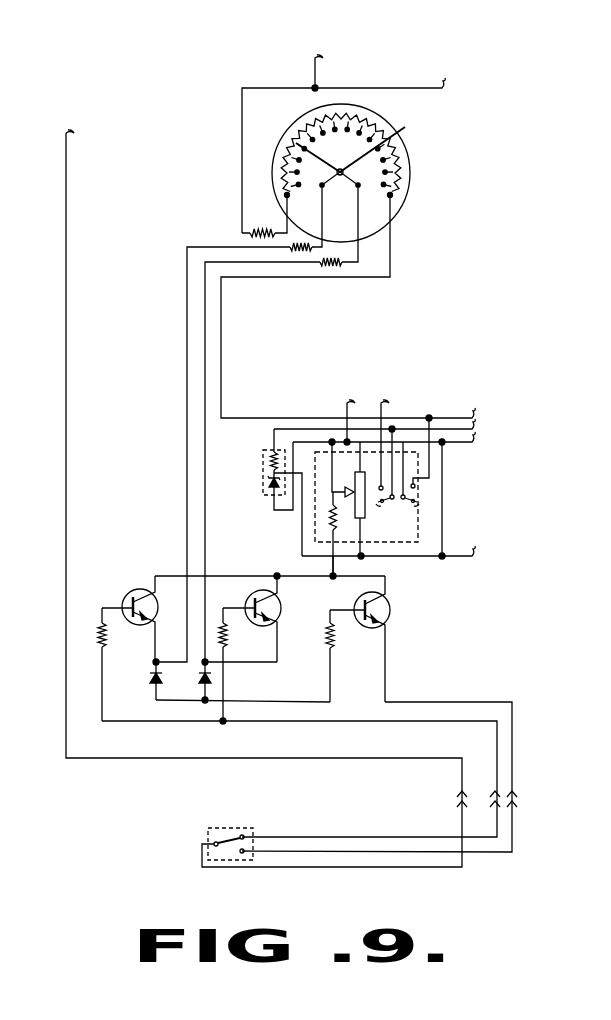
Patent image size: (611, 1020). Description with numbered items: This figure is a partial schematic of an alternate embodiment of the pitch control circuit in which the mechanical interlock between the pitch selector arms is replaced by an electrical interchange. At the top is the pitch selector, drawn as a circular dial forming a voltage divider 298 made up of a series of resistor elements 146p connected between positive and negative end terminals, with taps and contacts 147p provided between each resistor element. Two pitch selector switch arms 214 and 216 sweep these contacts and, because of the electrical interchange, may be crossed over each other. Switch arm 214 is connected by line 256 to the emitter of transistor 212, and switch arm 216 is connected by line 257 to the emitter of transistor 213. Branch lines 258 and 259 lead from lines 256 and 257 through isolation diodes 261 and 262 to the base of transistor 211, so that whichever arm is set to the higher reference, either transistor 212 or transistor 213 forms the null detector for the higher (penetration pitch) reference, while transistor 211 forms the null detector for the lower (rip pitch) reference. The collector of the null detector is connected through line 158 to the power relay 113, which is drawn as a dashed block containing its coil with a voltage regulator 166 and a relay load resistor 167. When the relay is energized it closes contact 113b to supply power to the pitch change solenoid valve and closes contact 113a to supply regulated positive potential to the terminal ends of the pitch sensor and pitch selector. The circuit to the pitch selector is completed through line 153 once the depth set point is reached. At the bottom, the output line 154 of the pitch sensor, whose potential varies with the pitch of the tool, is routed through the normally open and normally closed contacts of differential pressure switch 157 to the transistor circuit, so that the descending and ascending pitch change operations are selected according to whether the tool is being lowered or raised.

The output line 154 is at (66, 178).
The voltage divider 298 is at (292, 121).
The resistor elements 146p is at (366, 126).
The taps and contacts 147p is at (389, 150).
The pitch selector switch arm 214 is at (314, 165).
The pitch selector switch arm 216 is at (369, 164).
The line 256 is at (359, 219).
The line 257 is at (186, 545).
The line 153 is at (392, 253).
The voltage regulator 166 is at (268, 491).
The power relay 113 is at (343, 492).
The relay load resistor 167 is at (333, 520).
The relay contact 113a is at (408, 481).
The relay contact 113b is at (386, 477).
The line 158 is at (335, 578).
The transistor 213 is at (141, 590).
The transistor 212 is at (284, 609).
The transistor 211 is at (393, 603).
The isolation diode 262 is at (155, 677).
The isolation diode 261 is at (204, 677).
The branch line 258 is at (204, 693).
The branch line 259 is at (155, 699).
The differential pressure switch 157 is at (222, 827).